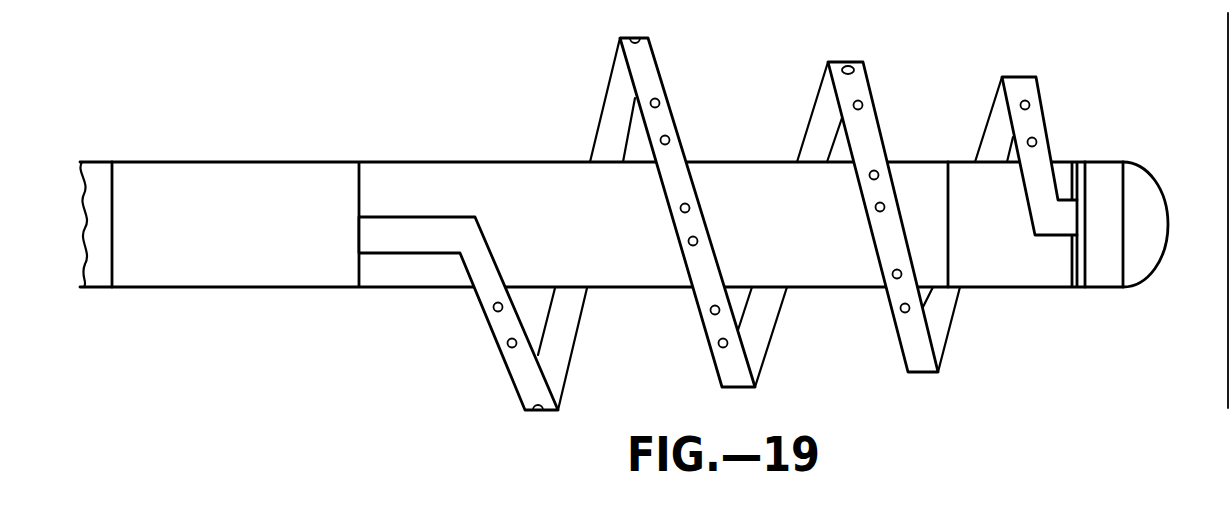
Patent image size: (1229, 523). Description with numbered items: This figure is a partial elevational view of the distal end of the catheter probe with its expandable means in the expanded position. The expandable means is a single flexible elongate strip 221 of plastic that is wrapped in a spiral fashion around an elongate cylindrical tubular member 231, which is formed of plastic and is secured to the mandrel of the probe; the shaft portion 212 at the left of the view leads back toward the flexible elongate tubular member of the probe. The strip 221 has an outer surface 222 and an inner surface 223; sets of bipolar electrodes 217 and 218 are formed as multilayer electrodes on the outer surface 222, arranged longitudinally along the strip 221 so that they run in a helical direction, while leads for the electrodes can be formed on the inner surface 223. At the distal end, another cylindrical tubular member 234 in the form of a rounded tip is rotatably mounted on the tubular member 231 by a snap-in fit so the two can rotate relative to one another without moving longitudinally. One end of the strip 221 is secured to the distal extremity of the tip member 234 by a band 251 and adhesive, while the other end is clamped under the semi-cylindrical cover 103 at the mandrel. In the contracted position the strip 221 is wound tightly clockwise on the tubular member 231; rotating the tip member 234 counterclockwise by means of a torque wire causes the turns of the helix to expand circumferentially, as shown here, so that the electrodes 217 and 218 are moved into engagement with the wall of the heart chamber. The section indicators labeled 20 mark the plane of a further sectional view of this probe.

The section line for FIG. 20 is at (1180, 408).
The semi-cylindrical cover 103 is at (295, 263).
The shaft end 212 is at (95, 270).
The bipolar electrode 217 is at (663, 98).
The bipolar electrode 218 is at (673, 135).
The flexible elongate strip 221 is at (822, 59).
The outer surface 222 is at (647, 70).
The inner surface 223 is at (618, 85).
The elongate cylindrical tubular member 231 is at (998, 270).
The cylindrical tubular member 234 is at (1143, 248).
The band 251 is at (1102, 268).